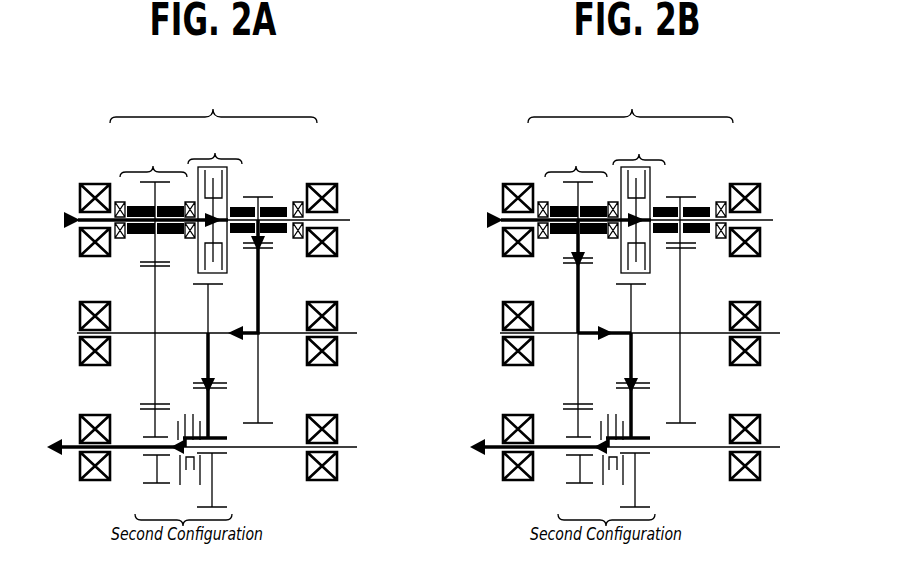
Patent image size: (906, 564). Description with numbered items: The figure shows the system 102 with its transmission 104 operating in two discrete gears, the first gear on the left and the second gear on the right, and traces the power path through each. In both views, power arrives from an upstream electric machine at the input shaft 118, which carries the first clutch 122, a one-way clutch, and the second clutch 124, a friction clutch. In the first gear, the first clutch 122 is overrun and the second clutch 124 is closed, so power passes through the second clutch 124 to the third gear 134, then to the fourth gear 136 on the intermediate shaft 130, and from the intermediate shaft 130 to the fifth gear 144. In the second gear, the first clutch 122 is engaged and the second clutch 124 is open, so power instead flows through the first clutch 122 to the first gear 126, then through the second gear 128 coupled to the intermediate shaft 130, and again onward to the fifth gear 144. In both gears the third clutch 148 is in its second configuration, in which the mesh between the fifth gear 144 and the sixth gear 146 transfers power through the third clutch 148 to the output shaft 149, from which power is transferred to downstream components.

In FIG. 2A, the system 102 is at (60, 166).
In FIG. 2B, the system 102 is at (485, 166).
In FIG. 2A, the transmission 104 is at (213, 129).
In FIG. 2B, the transmission 104 is at (630, 129).
In FIG. 2A, the input shaft 118 is at (342, 220).
In FIG. 2B, the input shaft 118 is at (765, 220).
In FIG. 2A, the first clutch 122 is at (130, 256).
In FIG. 2B, the first clutch 122 is at (553, 256).
In FIG. 2A, the second clutch 124 is at (246, 178).
In FIG. 2B, the second clutch 124 is at (668, 179).
In FIG. 2B, the first gear 126 is at (587, 248).
In FIG. 2B, the second gear 128 is at (582, 287).
In FIG. 2A, the intermediate shaft 130 is at (342, 333).
In FIG. 2B, the intermediate shaft 130 is at (765, 333).
In FIG. 2A, the third gear 134 is at (263, 243).
In FIG. 2B, the third gear 134 is at (681, 310).
In FIG. 2A, the fourth gear 136 is at (261, 287).
In FIG. 2A, the fifth gear 144 is at (206, 347).
In FIG. 2B, the fifth gear 144 is at (634, 324).
In FIG. 2A, the sixth gear 146 is at (212, 427).
In FIG. 2B, the sixth gear 146 is at (635, 428).
In FIG. 2A, the third clutch 148 is at (176, 492).
In FIG. 2B, the third clutch 148 is at (601, 492).
In FIG. 2A, the output shaft 149 is at (342, 447).
In FIG. 2B, the output shaft 149 is at (765, 447).